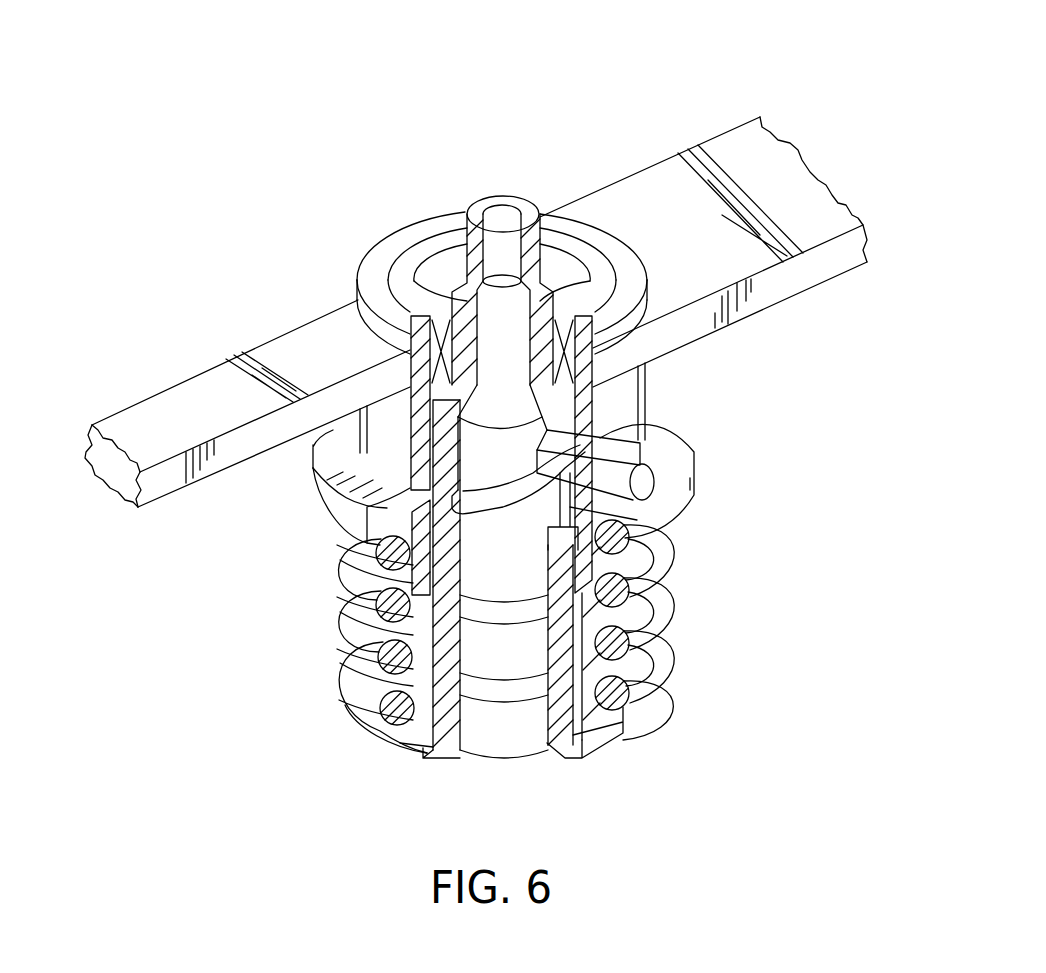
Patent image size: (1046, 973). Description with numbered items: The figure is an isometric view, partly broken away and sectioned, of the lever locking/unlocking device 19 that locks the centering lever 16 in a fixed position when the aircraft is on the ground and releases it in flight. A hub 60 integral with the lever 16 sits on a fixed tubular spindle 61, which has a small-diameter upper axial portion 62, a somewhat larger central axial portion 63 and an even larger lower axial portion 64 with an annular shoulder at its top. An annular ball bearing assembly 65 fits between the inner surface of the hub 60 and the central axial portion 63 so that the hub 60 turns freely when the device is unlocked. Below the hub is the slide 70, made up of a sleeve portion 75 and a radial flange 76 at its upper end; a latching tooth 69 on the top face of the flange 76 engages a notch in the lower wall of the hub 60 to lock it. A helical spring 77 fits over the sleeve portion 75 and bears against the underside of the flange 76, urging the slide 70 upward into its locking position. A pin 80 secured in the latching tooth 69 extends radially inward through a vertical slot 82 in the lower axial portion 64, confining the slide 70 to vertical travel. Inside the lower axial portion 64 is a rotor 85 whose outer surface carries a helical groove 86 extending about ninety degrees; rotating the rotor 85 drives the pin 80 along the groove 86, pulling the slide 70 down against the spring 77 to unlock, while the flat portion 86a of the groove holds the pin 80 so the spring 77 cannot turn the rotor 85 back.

The centering lever 16 is at (651, 147).
The lever locking/unlocking device 19 is at (708, 661).
The hub 60 is at (646, 382).
The fixed tubular spindle 61 is at (355, 694).
The upper axial portion 62 is at (542, 217).
The central axial portion 63 is at (610, 352).
The lower axial portion 64 is at (590, 743).
The annular ball bearing assembly 65 is at (415, 255).
The latching tooth 69 is at (630, 425).
The slide 70 is at (388, 575).
The sleeve portion 75 is at (458, 577).
The radial flange 76 is at (326, 505).
The helical spring 77 is at (660, 605).
The pin 80 is at (670, 487).
The vertical slot 82 is at (563, 508).
The rotor 85 is at (510, 747).
The helical groove 86 is at (507, 478).
The flat portion 86a is at (408, 457).